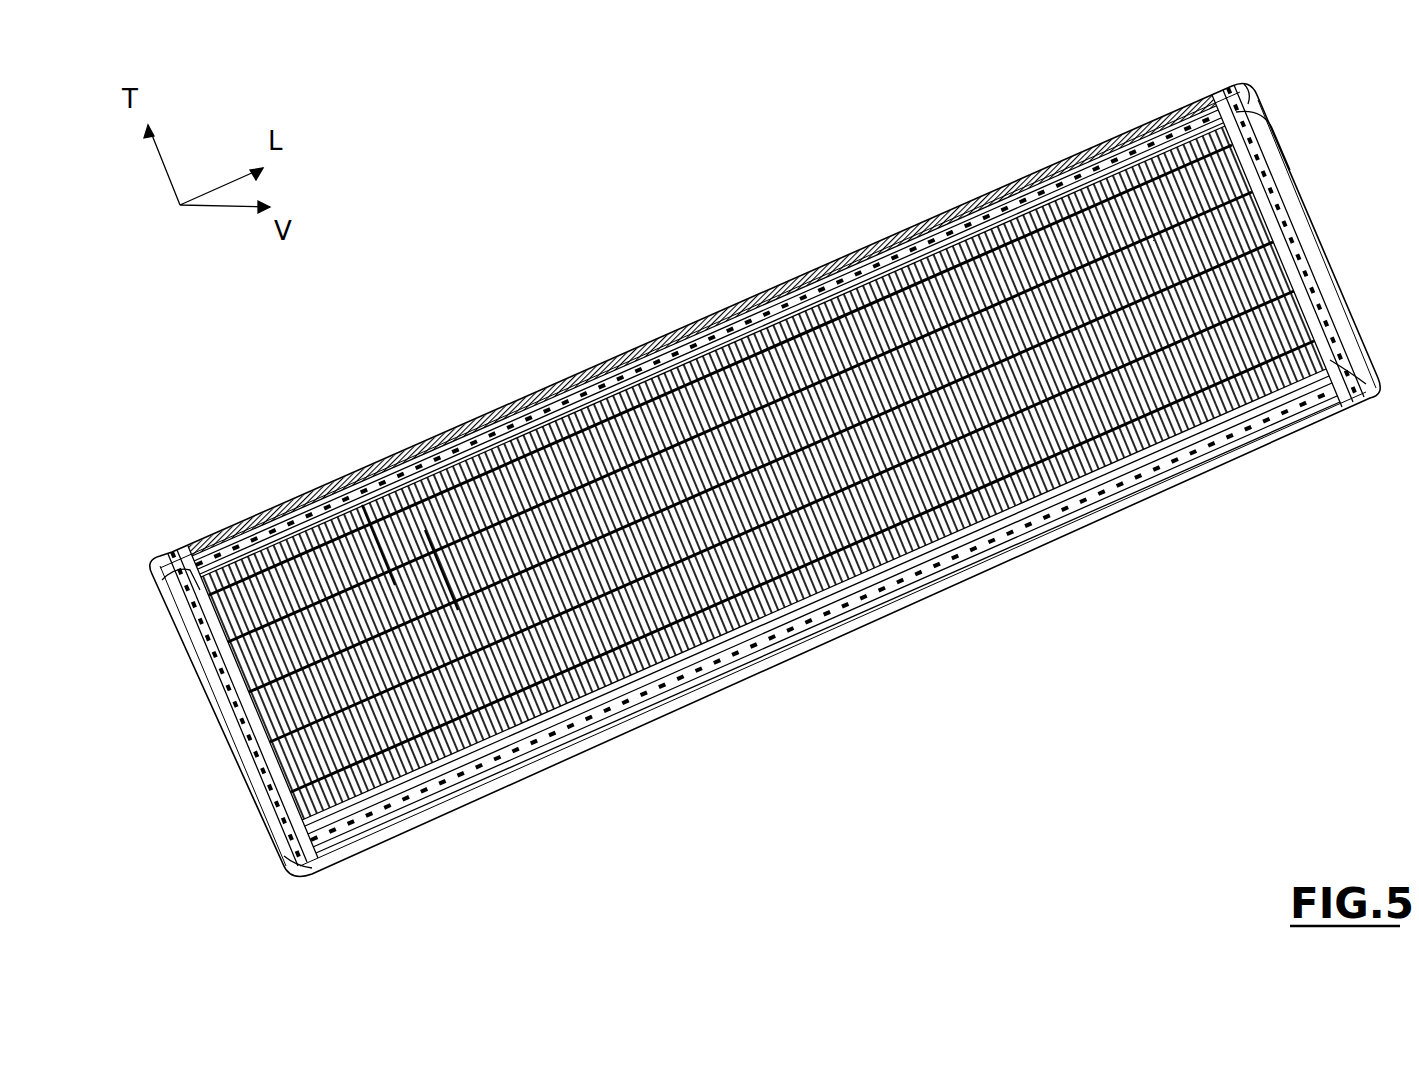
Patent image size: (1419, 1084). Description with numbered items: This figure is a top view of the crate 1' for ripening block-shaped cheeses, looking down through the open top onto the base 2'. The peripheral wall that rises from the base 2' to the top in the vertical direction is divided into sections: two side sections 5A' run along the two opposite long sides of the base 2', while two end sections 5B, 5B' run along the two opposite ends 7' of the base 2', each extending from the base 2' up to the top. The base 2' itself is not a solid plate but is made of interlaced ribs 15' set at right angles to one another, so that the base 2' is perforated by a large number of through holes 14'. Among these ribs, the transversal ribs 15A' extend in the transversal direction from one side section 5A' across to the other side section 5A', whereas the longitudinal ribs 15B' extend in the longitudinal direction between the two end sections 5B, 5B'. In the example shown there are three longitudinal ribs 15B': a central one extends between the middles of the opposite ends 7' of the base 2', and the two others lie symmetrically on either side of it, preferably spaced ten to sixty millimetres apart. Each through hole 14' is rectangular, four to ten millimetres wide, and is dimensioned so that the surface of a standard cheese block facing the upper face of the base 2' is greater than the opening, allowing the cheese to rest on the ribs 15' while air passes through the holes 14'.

The crate 1' is at (738, 477).
The base 2' is at (706, 325).
The side section 5A' is at (821, 523).
The end section 5B is at (1315, 246).
The end section 5B' is at (206, 706).
The end of the base 7' is at (757, 476).
The through hole 14' is at (763, 504).
The interlaced ribs 15' is at (761, 468).
The transversal rib 15A' is at (423, 465).
The longitudinal rib 15B' is at (358, 472).